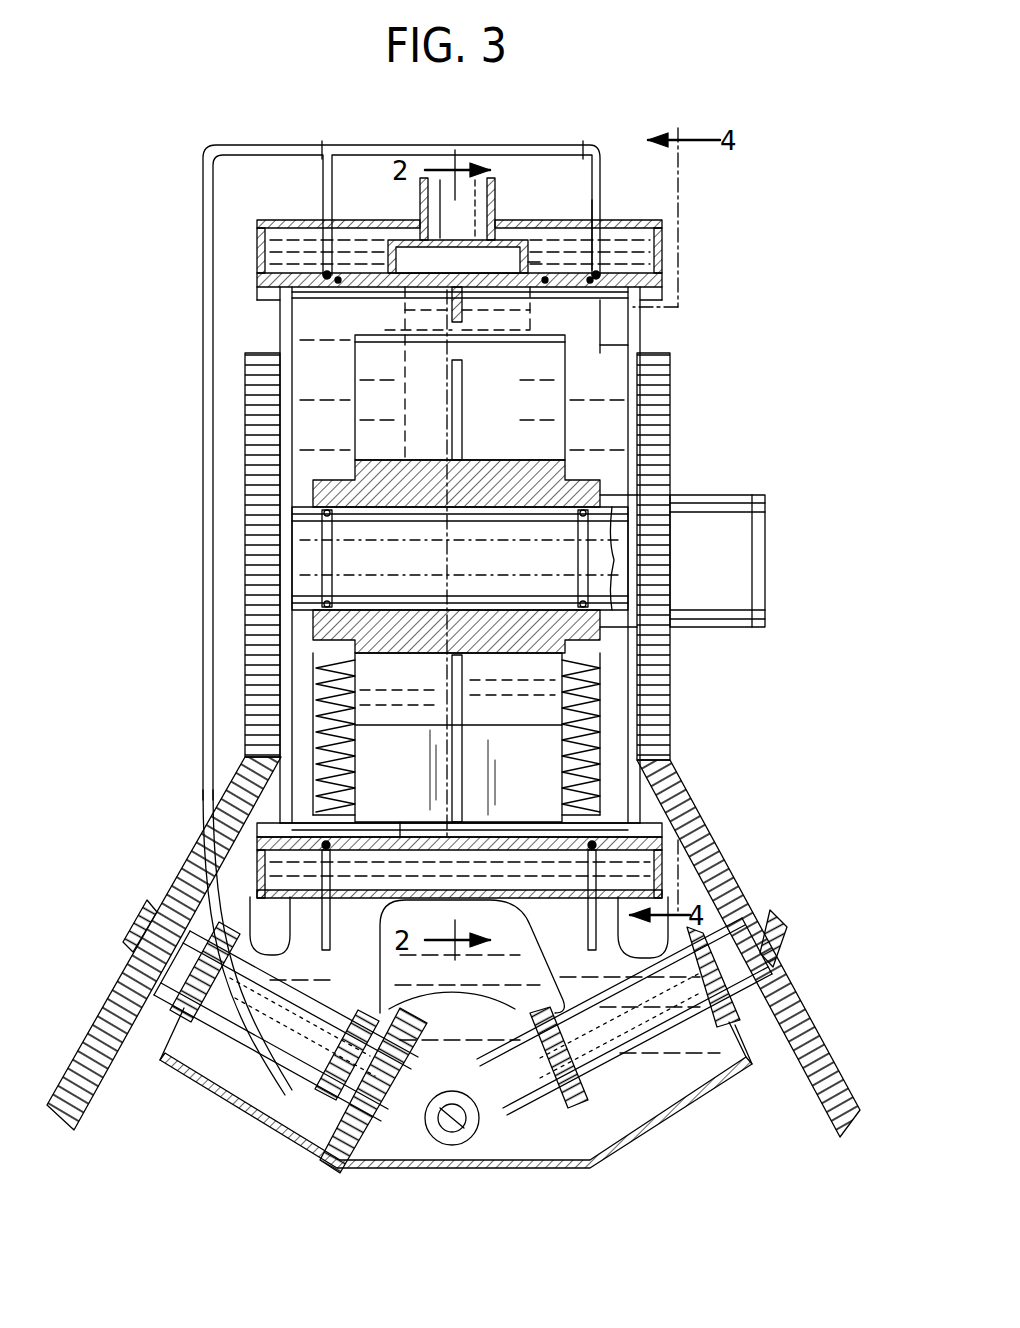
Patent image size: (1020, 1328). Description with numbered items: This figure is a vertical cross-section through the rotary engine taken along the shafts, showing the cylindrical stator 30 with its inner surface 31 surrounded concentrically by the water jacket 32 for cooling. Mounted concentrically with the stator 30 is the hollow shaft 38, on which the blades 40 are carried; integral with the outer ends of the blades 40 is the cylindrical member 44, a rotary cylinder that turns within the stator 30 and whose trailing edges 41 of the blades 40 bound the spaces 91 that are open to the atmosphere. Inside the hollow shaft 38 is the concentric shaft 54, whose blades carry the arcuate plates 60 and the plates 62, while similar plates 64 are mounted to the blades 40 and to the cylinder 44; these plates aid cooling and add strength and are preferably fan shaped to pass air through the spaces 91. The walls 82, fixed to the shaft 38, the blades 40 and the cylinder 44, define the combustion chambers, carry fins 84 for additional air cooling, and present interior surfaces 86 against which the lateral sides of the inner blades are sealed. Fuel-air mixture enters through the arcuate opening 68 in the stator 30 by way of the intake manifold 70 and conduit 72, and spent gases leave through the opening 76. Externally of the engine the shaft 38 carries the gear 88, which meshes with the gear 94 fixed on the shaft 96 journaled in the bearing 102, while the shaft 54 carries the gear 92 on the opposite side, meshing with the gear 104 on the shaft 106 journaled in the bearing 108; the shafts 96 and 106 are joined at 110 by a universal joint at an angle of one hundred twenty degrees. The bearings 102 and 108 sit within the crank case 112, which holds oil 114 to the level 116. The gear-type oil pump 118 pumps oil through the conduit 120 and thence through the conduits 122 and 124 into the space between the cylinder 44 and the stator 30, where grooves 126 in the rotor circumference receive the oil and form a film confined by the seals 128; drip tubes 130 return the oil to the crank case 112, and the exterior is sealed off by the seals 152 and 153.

The cylindrical stator 30 is at (655, 280).
The inner surface of the stator 31 is at (645, 296).
The water jacket 32 is at (618, 222).
The hollow shaft 38 is at (705, 502).
The blades 40 is at (410, 779).
The trailing edges of the blades 41 is at (524, 779).
The cylindrical member 44 is at (400, 830).
The shaft 54 is at (464, 554).
The arcuate plates 60 is at (555, 386).
The plates 62 is at (462, 430).
The plates 64 is at (462, 336).
The arcuate opening 68 is at (400, 270).
The intake manifold 70 is at (497, 240).
The conduit 72 is at (495, 190).
The opening 76 is at (405, 396).
The walls 82 is at (300, 690).
The fins 84 is at (318, 661).
The interior surfaces of the end walls 86 is at (356, 690).
The gear 88 is at (660, 410).
The spaces 91 is at (640, 350).
The gear 92 is at (246, 420).
The gear 94 is at (732, 862).
The shaft 96 is at (788, 920).
The bearing 102 is at (680, 1032).
The gear 104 is at (196, 852).
The shaft 106 is at (124, 925).
The bearing 108 is at (335, 1006).
The universal joint connection 110 is at (452, 1135).
The crank case 112 is at (598, 1166).
The oil 114 is at (472, 970).
The oil level 116 is at (347, 900).
The oil pump 118 is at (322, 1163).
The conduit 120 is at (258, 1112).
The conduit 122 is at (323, 176).
The conduit 124 is at (600, 180).
The grooves 126 is at (325, 272).
The seals 128 is at (338, 283).
The drip tubes 130 is at (588, 916).
The seal 152 is at (330, 516).
The seal 153 is at (580, 516).